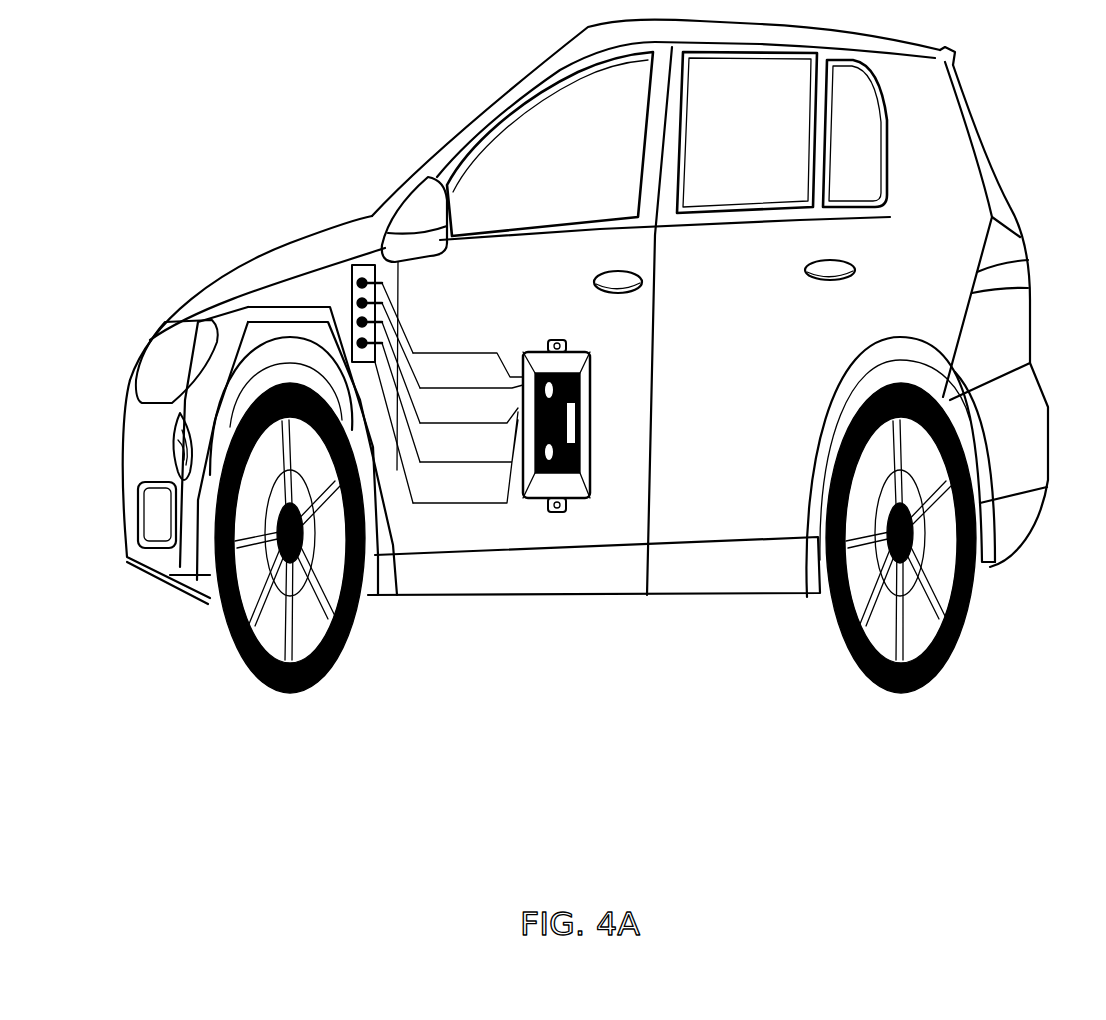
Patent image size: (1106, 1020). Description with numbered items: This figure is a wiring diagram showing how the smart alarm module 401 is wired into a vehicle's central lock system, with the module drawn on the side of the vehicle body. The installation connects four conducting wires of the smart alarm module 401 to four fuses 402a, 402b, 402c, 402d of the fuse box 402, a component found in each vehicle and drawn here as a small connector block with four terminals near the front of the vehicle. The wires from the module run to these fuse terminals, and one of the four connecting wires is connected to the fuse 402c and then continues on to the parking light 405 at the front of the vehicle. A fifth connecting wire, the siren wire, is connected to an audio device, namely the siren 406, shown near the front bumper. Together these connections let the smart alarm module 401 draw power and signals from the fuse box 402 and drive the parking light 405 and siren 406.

The smart alarm module 401 is at (572, 490).
The fuse box 402 is at (384, 228).
The fuse 402a is at (365, 250).
The fuse 402b is at (360, 320).
The fuse 402c is at (353, 265).
The fuse 402d is at (400, 345).
The parking light 405 is at (177, 347).
The siren 406 is at (182, 490).